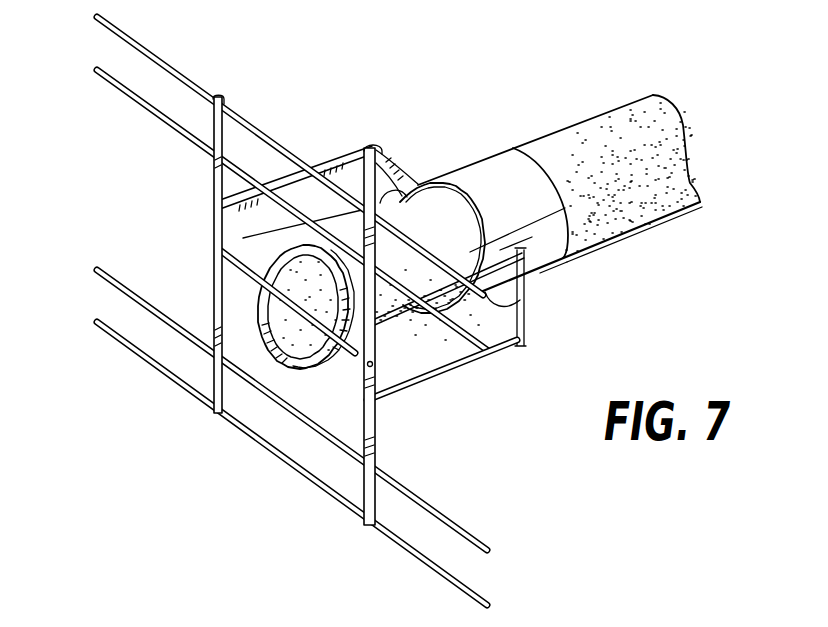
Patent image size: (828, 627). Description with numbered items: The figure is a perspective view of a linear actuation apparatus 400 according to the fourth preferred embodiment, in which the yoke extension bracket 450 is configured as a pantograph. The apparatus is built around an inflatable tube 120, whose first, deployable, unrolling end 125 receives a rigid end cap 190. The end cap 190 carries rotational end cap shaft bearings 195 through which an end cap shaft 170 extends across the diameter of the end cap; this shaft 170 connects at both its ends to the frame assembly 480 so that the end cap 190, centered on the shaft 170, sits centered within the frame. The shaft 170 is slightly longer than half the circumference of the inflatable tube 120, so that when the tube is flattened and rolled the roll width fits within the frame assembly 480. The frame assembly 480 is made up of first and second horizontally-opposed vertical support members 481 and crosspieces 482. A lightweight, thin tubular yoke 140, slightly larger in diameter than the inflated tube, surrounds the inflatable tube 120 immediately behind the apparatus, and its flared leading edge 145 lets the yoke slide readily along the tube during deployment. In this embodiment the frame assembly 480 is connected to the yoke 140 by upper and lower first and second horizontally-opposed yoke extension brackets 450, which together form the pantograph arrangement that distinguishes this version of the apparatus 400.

The linear actuation apparatus 400 is at (327, 92).
The inflatable tube 120 is at (583, 135).
The yoke 140 is at (503, 150).
The flared leading edge 145 is at (427, 184).
The deployable unrolling end 125 is at (244, 366).
The end cap 190 is at (287, 337).
The end cap shaft 170 is at (292, 342).
The end cap shaft bearings 195 is at (283, 340).
The frame assembly 480 is at (327, 311).
The vertical support members 481 is at (377, 440).
The crosspieces 482 is at (392, 533).
The yoke extension bracket 450 is at (510, 348).